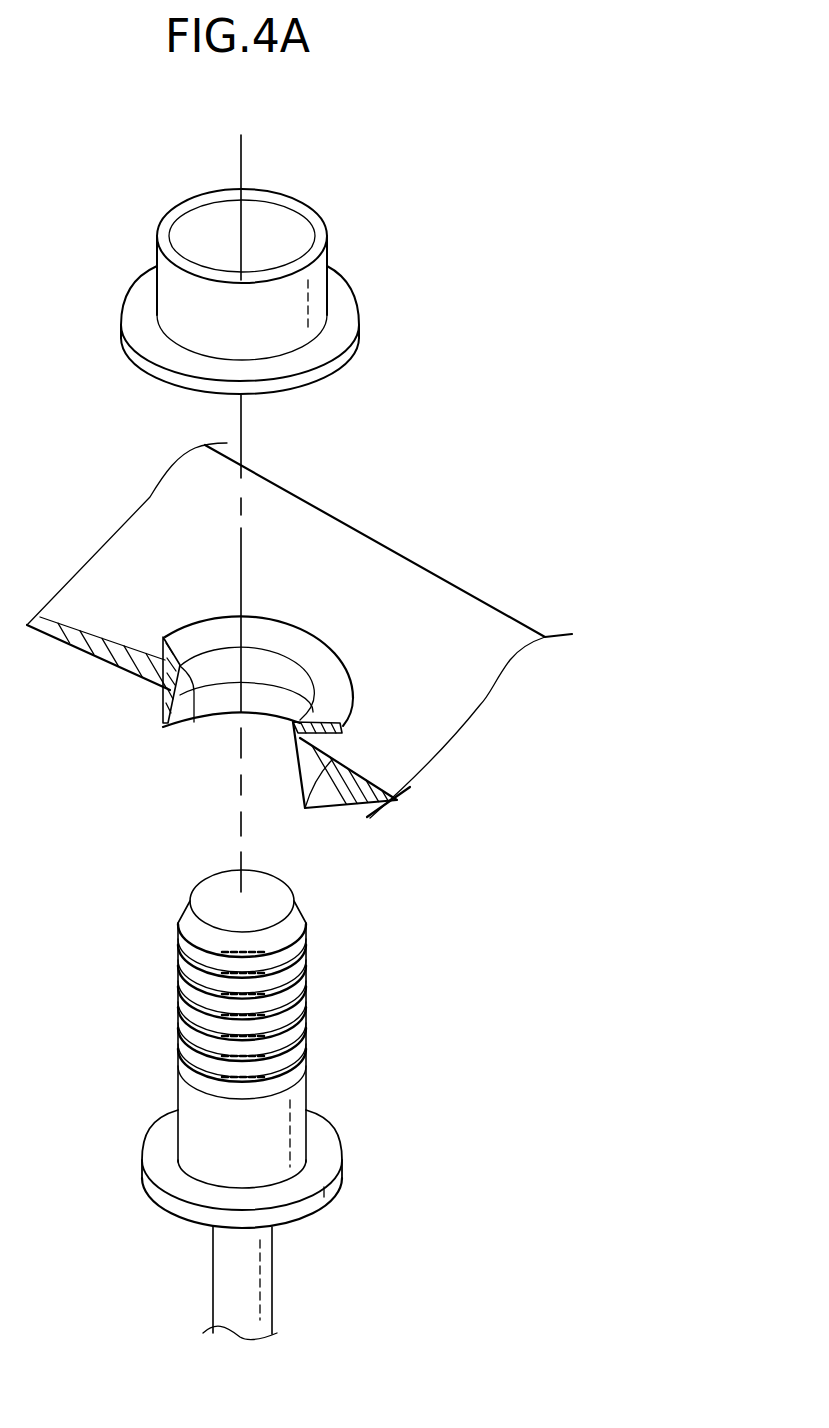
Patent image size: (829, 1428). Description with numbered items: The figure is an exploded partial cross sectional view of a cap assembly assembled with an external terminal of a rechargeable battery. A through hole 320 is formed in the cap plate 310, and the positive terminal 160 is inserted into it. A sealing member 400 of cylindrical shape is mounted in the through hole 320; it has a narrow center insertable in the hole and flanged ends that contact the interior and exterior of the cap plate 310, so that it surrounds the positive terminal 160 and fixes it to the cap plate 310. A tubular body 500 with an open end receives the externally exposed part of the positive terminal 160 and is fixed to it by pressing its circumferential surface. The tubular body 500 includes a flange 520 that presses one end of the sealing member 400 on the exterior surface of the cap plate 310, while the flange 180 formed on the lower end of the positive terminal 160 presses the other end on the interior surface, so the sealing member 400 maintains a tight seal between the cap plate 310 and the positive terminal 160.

The tubular body 500 is at (274, 291).
The flange 520 is at (340, 310).
The cap plate 310 is at (343, 790).
The sealing member 400 is at (162, 712).
The through hole 320 is at (190, 718).
The positive terminal 160 is at (300, 1007).
The flange 180 is at (156, 1148).